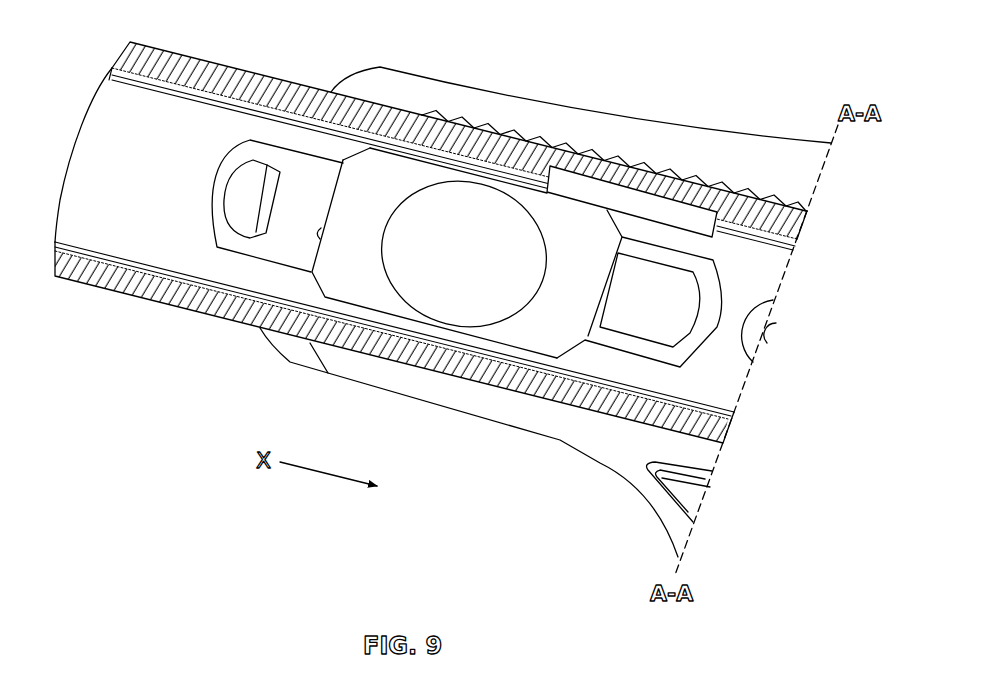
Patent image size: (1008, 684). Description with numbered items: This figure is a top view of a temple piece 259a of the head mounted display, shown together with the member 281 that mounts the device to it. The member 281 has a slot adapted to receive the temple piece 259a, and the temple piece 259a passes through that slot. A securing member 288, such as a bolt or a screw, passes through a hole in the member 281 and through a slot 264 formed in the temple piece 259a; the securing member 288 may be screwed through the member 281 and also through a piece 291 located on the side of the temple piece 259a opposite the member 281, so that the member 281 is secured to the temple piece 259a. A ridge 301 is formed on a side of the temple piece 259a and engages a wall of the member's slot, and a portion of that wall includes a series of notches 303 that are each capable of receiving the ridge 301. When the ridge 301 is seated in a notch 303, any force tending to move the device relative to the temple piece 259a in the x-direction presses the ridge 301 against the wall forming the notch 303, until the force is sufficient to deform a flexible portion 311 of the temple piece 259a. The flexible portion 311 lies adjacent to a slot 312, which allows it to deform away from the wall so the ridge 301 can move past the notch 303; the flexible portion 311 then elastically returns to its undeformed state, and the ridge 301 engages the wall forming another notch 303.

The temple piece 259a is at (190, 37).
The slot 264 is at (314, 157).
The member 281 is at (456, 70).
The securing member 288 is at (421, 192).
The piece 291 is at (319, 234).
The ridge 301 is at (604, 147).
The notches 303 is at (543, 127).
The flexible portion 311 is at (608, 180).
The slot 312 is at (636, 218).